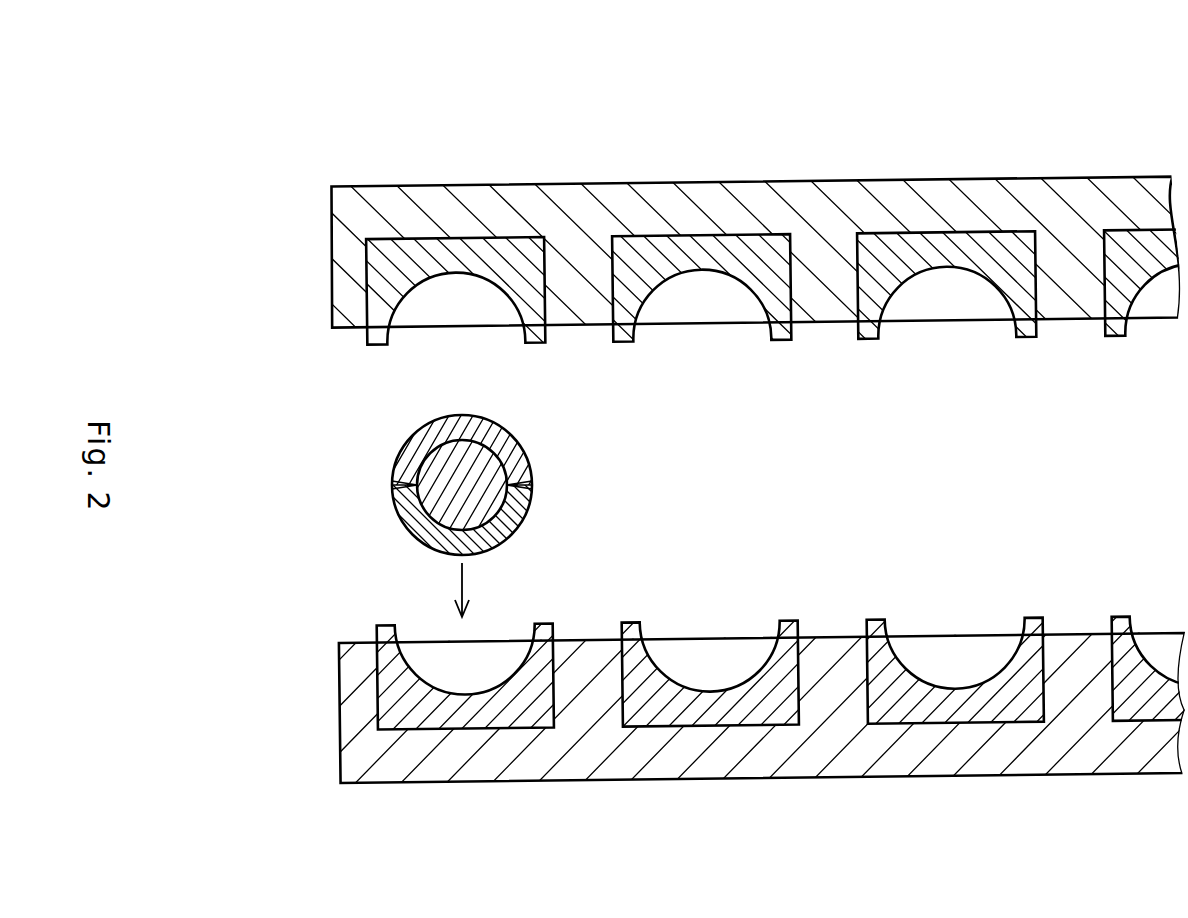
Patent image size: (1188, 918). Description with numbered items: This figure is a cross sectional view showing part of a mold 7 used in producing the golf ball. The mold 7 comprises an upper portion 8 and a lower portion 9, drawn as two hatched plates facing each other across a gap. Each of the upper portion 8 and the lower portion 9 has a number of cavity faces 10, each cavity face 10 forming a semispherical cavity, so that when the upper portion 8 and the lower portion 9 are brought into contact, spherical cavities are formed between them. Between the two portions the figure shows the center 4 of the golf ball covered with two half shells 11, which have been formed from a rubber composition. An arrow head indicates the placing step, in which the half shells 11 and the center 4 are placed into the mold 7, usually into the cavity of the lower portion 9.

The mold 7 is at (1153, 87).
The upper portion 8 is at (771, 200).
The lower portion 9 is at (770, 758).
The cavity face 10 is at (914, 292).
The half shell 11 is at (407, 442).
The center 4 is at (433, 485).